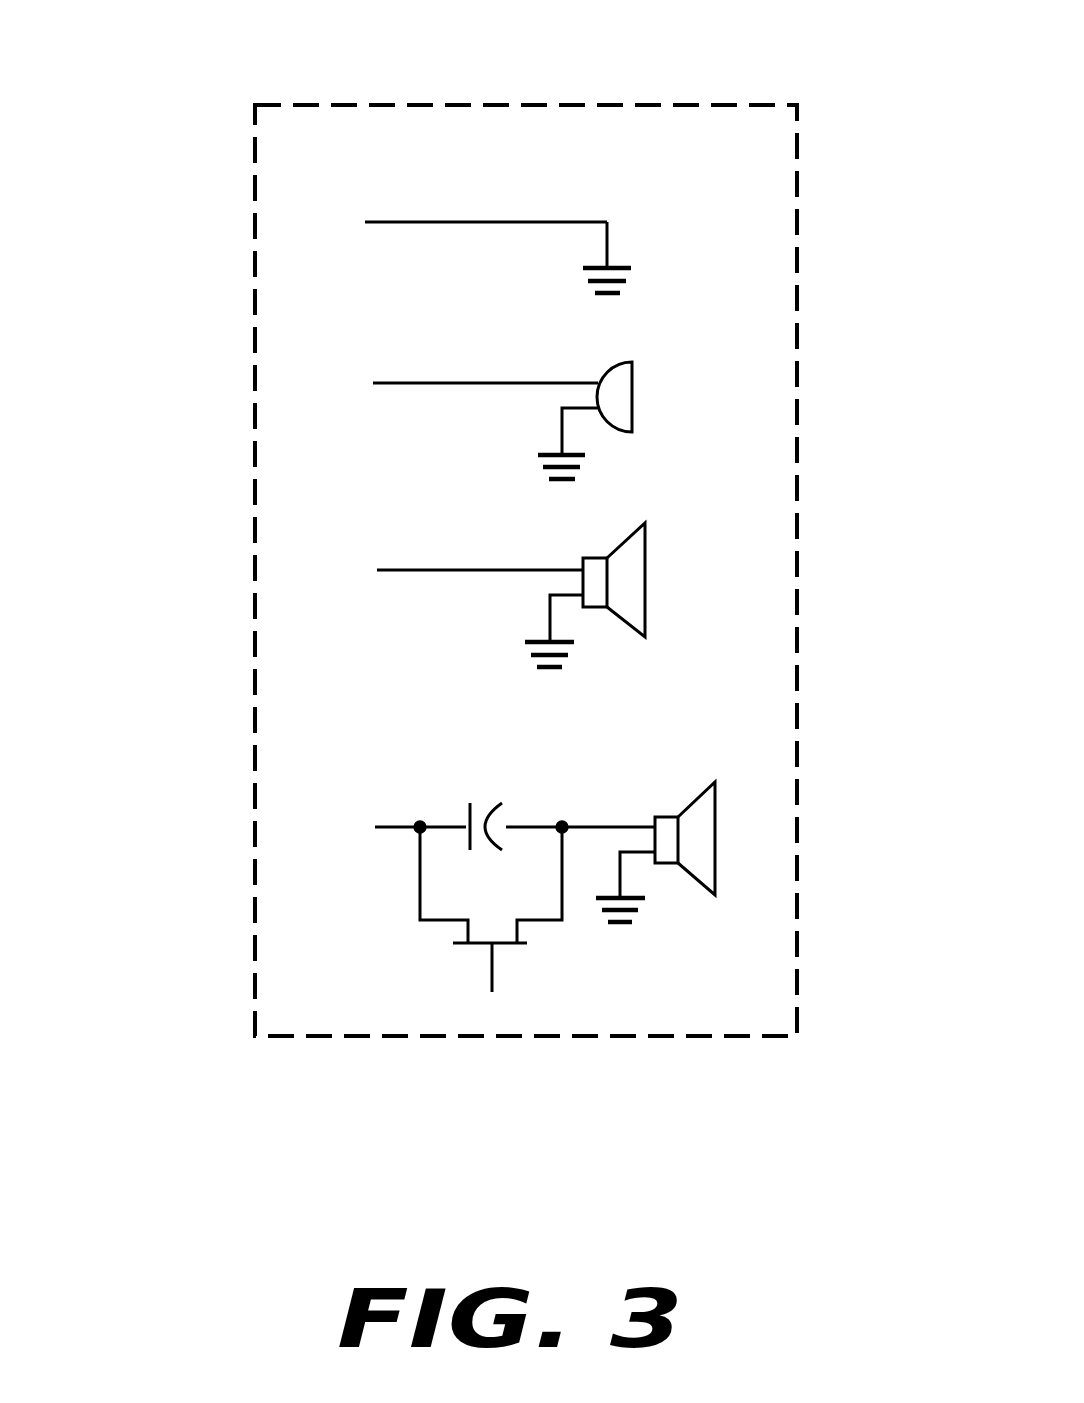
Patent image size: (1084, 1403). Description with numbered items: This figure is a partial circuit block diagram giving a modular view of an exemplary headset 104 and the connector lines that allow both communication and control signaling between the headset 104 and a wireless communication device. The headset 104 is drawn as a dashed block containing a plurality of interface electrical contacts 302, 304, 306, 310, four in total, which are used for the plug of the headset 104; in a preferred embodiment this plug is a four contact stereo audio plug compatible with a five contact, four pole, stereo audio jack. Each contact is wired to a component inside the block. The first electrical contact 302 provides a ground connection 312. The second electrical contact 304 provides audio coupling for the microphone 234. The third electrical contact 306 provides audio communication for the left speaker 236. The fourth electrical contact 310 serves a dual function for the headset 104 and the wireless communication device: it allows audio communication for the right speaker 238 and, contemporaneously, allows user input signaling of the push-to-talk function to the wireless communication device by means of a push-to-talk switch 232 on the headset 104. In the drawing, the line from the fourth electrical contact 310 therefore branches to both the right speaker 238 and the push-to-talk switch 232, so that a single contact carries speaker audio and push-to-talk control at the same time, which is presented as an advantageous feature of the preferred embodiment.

The headset 104 is at (255, 105).
The first electrical contact 302 is at (327, 195).
The second electrical contact 304 is at (325, 355).
The third electrical contact 306 is at (333, 537).
The fourth electrical contact 310 is at (333, 812).
The ground connection 312 is at (648, 273).
The microphone 234 is at (648, 388).
The left speaker 236 is at (652, 552).
The right speaker 238 is at (717, 813).
The push-to-talk switch 232 is at (533, 945).